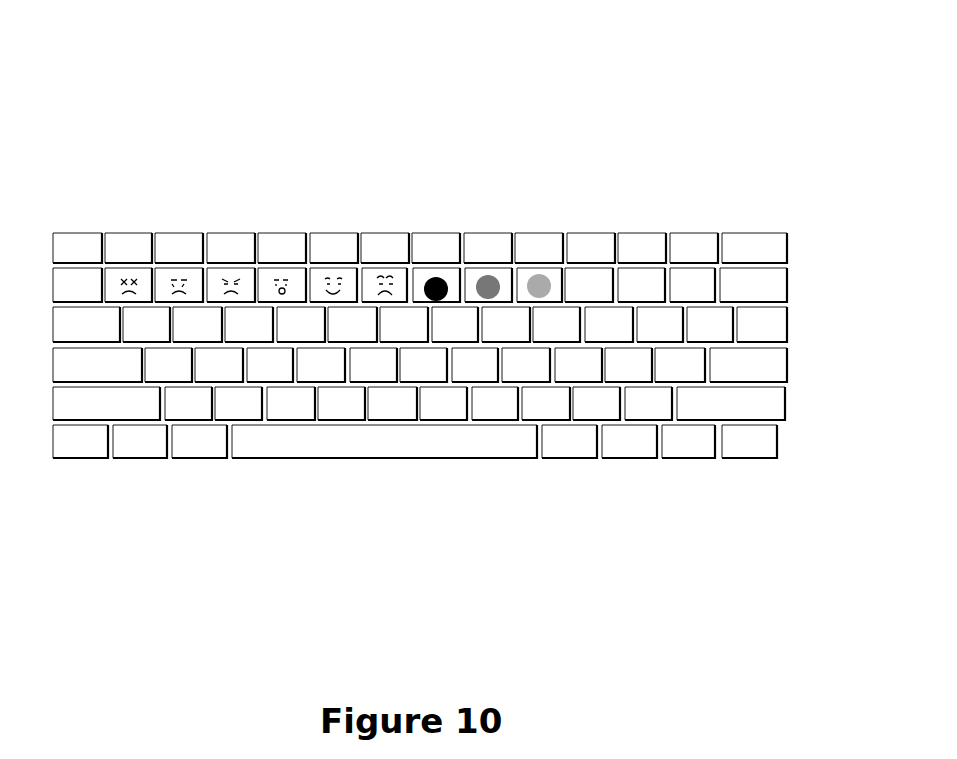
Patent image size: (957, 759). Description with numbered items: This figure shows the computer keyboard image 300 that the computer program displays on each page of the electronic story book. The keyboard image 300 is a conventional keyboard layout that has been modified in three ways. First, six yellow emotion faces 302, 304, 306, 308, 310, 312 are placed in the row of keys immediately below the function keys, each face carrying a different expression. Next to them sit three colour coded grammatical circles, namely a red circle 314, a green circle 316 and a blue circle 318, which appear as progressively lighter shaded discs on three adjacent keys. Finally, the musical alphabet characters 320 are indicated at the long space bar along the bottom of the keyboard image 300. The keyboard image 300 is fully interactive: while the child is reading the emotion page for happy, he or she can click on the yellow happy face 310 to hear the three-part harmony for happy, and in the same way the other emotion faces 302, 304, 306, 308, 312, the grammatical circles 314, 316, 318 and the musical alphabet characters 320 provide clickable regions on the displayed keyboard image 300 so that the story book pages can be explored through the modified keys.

The computer keyboard image 300 is at (485, 127).
The yellow emotion face 302 is at (128, 265).
The yellow emotion face 304 is at (193, 277).
The yellow emotion face 306 is at (248, 292).
The yellow emotion face 308 is at (298, 283).
The yellow happy face 310 is at (349, 283).
The yellow emotion face 312 is at (396, 288).
The red grammatical circle 314 is at (436, 287).
The green grammatical circle 316 is at (487, 285).
The blue grammatical circle 318 is at (537, 283).
The musical alphabet characters 320 is at (320, 437).